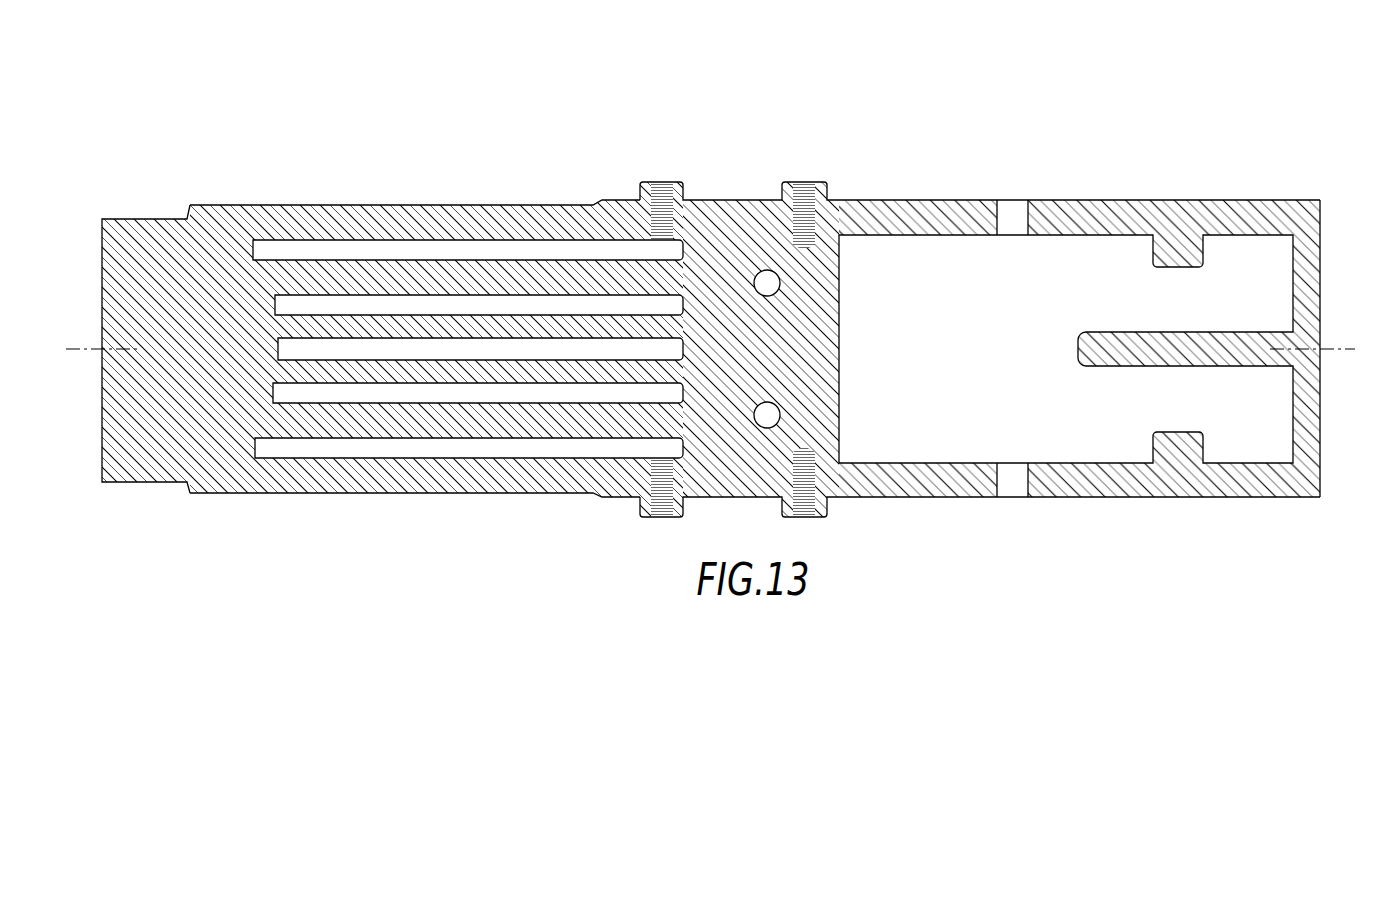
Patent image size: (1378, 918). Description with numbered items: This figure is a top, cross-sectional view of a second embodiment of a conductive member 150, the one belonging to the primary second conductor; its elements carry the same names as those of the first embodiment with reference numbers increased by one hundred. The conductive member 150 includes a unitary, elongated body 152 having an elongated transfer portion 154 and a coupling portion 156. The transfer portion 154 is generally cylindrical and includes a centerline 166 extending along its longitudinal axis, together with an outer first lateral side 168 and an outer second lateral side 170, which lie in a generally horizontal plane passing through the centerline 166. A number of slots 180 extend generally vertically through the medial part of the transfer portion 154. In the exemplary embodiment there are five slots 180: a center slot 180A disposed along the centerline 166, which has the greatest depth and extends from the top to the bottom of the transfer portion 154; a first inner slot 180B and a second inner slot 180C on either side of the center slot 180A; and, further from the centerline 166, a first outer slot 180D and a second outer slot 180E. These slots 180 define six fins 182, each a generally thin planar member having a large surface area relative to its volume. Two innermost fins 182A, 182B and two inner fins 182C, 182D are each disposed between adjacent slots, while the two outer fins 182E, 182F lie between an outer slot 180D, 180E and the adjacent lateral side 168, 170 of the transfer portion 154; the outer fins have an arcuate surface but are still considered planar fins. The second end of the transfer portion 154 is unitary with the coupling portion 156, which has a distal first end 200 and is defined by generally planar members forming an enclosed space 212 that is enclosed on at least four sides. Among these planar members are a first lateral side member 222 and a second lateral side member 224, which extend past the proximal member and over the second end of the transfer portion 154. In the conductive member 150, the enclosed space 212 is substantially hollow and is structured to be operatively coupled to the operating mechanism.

The conductive member 150 is at (713, 323).
The conductive member body 152 is at (733, 203).
The body transfer portion 154 is at (372, 347).
The body coupling portion 156 is at (1102, 292).
The transfer portion centerline 166 is at (102, 218).
The transfer portion first lateral side 168 is at (318, 205).
The transfer portion second lateral side 170 is at (292, 494).
The slots 180 is at (437, 421).
The center slot 180A is at (290, 351).
The first inner slot 180B is at (286, 395).
The second inner slot 180C is at (286, 308).
The first outer slot 180D is at (270, 450).
The second outer slot 180E is at (268, 251).
The fins 182 is at (436, 391).
The innermost fin 182A is at (340, 325).
The innermost fin 182B is at (392, 376).
The inner fin 182C is at (455, 272).
The inner fin 182D is at (432, 428).
The outer fin 182E is at (478, 220).
The outer fin 182F is at (585, 494).
The body coupling portion first end 200 is at (1318, 200).
The body coupling portion enclosed space 212 is at (950, 443).
The first lateral side member 222 is at (1318, 272).
The second lateral side member 224 is at (1097, 204).